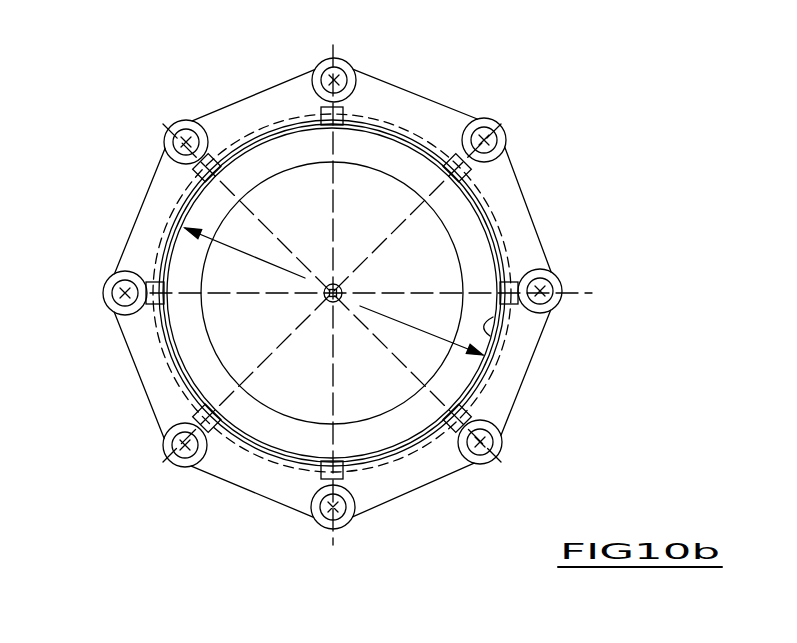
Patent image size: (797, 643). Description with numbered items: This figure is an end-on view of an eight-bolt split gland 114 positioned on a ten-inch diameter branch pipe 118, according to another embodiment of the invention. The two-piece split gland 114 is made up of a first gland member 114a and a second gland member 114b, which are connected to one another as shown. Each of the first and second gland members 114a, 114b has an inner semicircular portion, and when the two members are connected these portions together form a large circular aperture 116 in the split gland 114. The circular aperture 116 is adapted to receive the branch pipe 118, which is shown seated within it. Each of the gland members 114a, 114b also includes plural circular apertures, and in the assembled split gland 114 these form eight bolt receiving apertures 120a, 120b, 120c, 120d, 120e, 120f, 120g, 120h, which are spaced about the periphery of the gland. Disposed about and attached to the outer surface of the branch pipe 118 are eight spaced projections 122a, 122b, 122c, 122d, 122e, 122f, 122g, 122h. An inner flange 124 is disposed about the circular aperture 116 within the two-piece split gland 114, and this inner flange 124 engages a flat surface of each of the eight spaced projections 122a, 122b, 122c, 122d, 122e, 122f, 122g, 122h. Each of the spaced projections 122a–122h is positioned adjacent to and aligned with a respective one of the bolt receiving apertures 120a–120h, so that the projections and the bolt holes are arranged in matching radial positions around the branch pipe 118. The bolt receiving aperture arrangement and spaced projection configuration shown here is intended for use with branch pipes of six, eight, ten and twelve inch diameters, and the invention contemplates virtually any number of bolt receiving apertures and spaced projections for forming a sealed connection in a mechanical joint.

The split gland 114 is at (600, 80).
The first gland member 114a is at (235, 120).
The second gland member 114b is at (508, 190).
The circular aperture 116 is at (517, 315).
The branch pipe 118 is at (477, 307).
The inner flange 124 is at (380, 462).
The bolt receiving aperture 120a is at (352, 80).
The bolt receiving aperture 120b is at (168, 150).
The bolt receiving aperture 120c is at (127, 283).
The bolt receiving aperture 120d is at (188, 458).
The bolt receiving aperture 120e is at (335, 512).
The bolt receiving aperture 120f is at (483, 448).
The bolt receiving aperture 120g is at (562, 290).
The bolt receiving aperture 120h is at (500, 124).
The spaced projection 122a is at (347, 105).
The spaced projection 122b is at (200, 170).
The spaced projection 122c is at (153, 305).
The spaced projection 122d is at (197, 415).
The spaced projection 122e is at (322, 478).
The spaced projection 122f is at (470, 420).
The spaced projection 122g is at (514, 280).
The spaced projection 122h is at (468, 167).